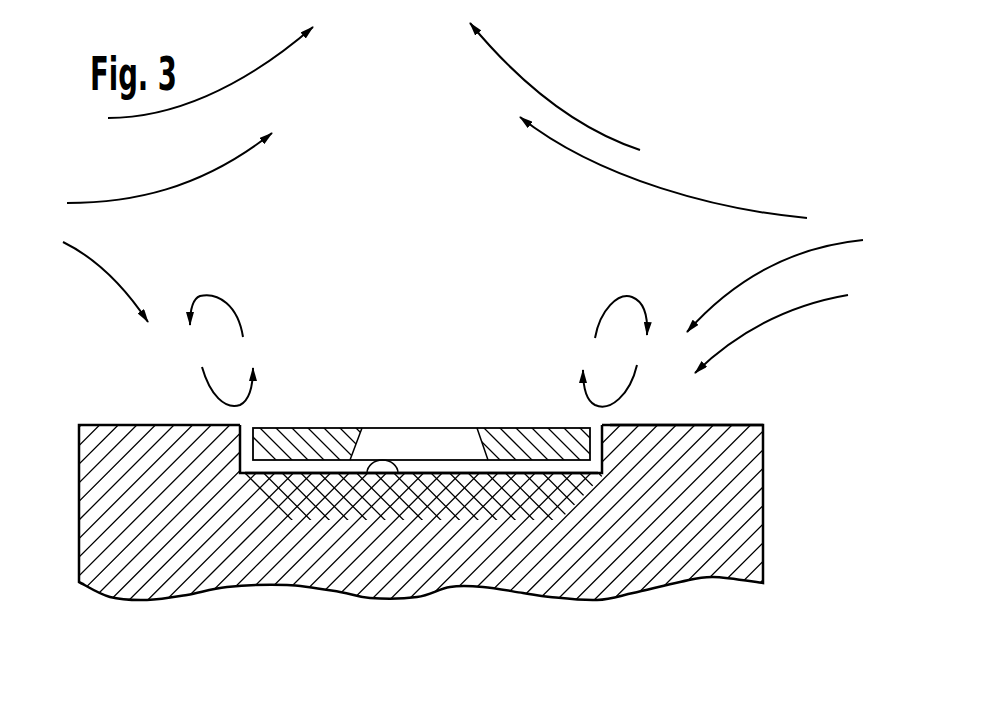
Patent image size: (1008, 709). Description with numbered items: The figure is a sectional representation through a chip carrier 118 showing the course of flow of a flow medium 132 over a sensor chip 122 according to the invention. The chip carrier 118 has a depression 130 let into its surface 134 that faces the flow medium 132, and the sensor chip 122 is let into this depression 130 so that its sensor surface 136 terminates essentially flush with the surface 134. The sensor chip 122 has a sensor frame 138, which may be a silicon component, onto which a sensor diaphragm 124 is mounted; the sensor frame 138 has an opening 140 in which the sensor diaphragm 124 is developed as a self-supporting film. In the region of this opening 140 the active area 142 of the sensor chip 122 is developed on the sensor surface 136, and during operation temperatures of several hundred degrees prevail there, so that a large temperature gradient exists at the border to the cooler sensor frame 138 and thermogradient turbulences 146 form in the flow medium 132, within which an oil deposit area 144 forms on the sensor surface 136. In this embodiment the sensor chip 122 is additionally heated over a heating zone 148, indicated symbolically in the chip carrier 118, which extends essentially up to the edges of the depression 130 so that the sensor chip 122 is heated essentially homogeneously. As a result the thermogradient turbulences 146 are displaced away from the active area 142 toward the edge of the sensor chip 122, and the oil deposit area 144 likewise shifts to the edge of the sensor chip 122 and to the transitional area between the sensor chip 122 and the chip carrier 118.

The chip carrier 118 is at (715, 505).
The sensor chip 122 is at (527, 470).
The sensor diaphragm 124 is at (451, 430).
The depression 130 is at (373, 477).
The flow medium 132 is at (685, 153).
The surface 134 is at (700, 425).
The sensor surface 136 is at (322, 425).
The sensor frame 138 is at (280, 447).
The opening 140 is at (423, 450).
The active area 142 is at (395, 420).
The oil deposit area 144 is at (585, 415).
The thermogradient turbulences 146 is at (616, 305).
The heating zone 148 is at (528, 527).